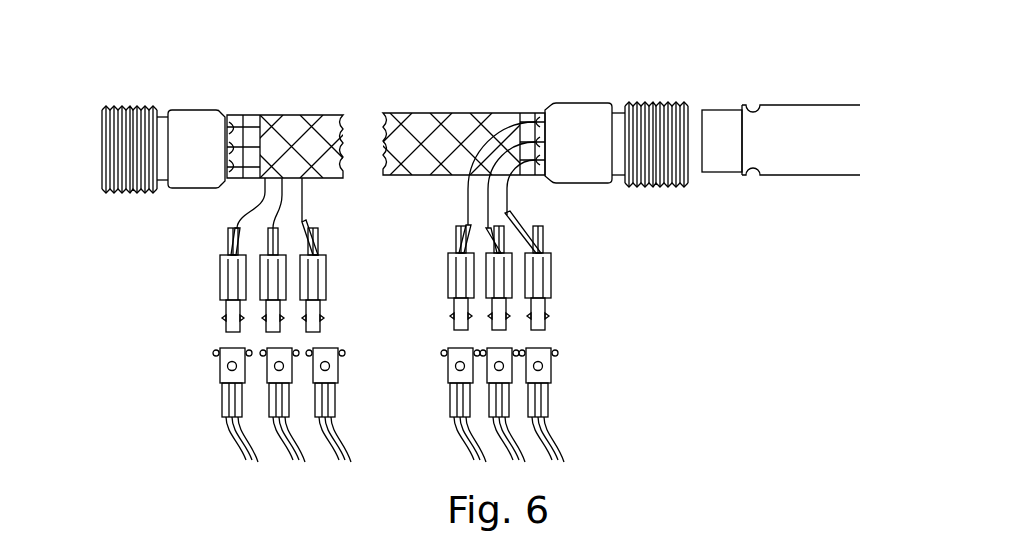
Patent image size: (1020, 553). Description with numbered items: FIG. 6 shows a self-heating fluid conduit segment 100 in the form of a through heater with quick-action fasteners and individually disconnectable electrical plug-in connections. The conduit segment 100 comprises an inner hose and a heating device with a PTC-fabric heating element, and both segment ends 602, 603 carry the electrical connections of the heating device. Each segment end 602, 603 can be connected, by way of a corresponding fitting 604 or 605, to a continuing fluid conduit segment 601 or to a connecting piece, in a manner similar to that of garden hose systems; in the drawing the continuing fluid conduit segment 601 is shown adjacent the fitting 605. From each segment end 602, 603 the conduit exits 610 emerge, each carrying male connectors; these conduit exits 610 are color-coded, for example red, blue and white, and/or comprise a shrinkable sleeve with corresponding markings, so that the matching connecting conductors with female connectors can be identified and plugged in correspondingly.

The self-heating fluid conduit segment 100 is at (423, 72).
The continuing fluid conduit segment 601 is at (790, 105).
The segment end 602 is at (185, 108).
The segment end 603 is at (598, 102).
The fitting 604 is at (117, 107).
The fitting 605 is at (658, 100).
The conduit exits 610 is at (190, 290).